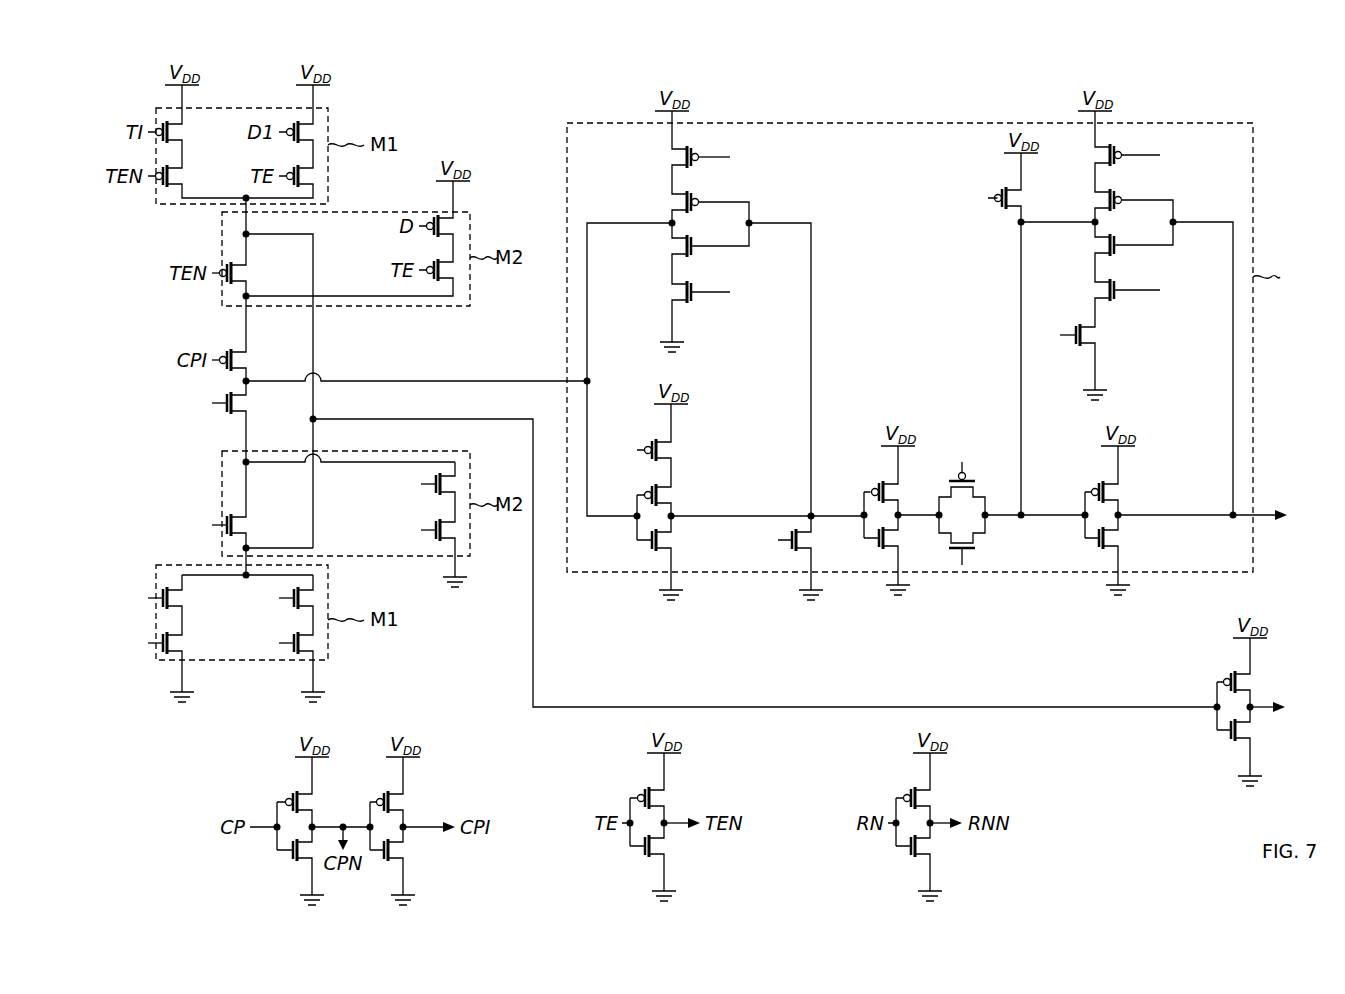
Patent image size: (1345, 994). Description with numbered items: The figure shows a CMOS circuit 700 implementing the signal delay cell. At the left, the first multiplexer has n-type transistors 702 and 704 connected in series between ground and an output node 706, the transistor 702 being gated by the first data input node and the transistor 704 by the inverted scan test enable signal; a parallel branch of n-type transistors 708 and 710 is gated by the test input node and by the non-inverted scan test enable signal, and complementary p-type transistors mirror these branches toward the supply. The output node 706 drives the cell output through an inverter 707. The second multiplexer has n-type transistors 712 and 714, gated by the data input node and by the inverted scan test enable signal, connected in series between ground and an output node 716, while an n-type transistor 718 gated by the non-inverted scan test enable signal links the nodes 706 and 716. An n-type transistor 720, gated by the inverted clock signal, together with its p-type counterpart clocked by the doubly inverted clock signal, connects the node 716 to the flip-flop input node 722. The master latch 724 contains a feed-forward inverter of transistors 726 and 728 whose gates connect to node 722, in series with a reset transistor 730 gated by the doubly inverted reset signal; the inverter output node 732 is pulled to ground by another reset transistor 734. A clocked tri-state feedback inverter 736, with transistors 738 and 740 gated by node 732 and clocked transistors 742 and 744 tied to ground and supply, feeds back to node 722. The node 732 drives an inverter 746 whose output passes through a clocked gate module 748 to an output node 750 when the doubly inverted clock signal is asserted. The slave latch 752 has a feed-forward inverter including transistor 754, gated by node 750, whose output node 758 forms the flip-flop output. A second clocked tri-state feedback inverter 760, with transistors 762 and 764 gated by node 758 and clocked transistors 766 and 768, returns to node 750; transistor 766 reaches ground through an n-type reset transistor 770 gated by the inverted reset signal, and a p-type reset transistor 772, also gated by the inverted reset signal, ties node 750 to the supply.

The circuit 700 is at (1290, 157).
The n-type CMOS transistor 702 is at (318, 645).
The n-type CMOS transistor 704 is at (318, 597).
The output node of the first multiplexer 706 is at (342, 419).
The inverter 707 is at (1199, 740).
The n-type CMOS transistor 708 is at (180, 643).
The n-type CMOS transistor 710 is at (180, 598).
The n-type CMOS transistor 712 is at (460, 532).
The n-type CMOS transistor 714 is at (460, 484).
The output node of the second multiplexer 716 is at (246, 462).
The n-type CMOS transistor 718 is at (250, 525).
The n-type CMOS transistor 720 is at (250, 403).
The node 722 is at (342, 381).
The master latch 724 is at (735, 516).
The CMOS transistor 726 is at (676, 540).
The CMOS transistor 728 is at (676, 495).
The reset CMOS transistor 730 is at (676, 450).
The output node 732 is at (808, 513).
The reset CMOS transistor 734 is at (799, 563).
The clocked tri-state feedback inverter 736 is at (728, 219).
The CMOS transistor 738 is at (672, 248).
The CMOS transistor 740 is at (672, 204).
The CMOS transistor 742 is at (672, 294).
The CMOS transistor 744 is at (672, 157).
The inverter 746 is at (881, 567).
The clocked gate module 748 is at (991, 567).
The output node of the gate module 750 is at (1023, 511).
The slave latch 752 is at (1126, 537).
The CMOS transistor 754 is at (1139, 564).
The output node 758 is at (1263, 518).
The clocked tri-state feedback inverter 760 is at (1123, 238).
The CMOS transistor 762 is at (1095, 247).
The CMOS transistor 764 is at (1095, 202).
The CMOS transistor 766 is at (1095, 292).
The CMOS transistor 768 is at (1095, 155).
The n-type reset CMOS transistor 770 is at (1100, 335).
The reset p-type CMOS transistor 772 is at (1003, 212).